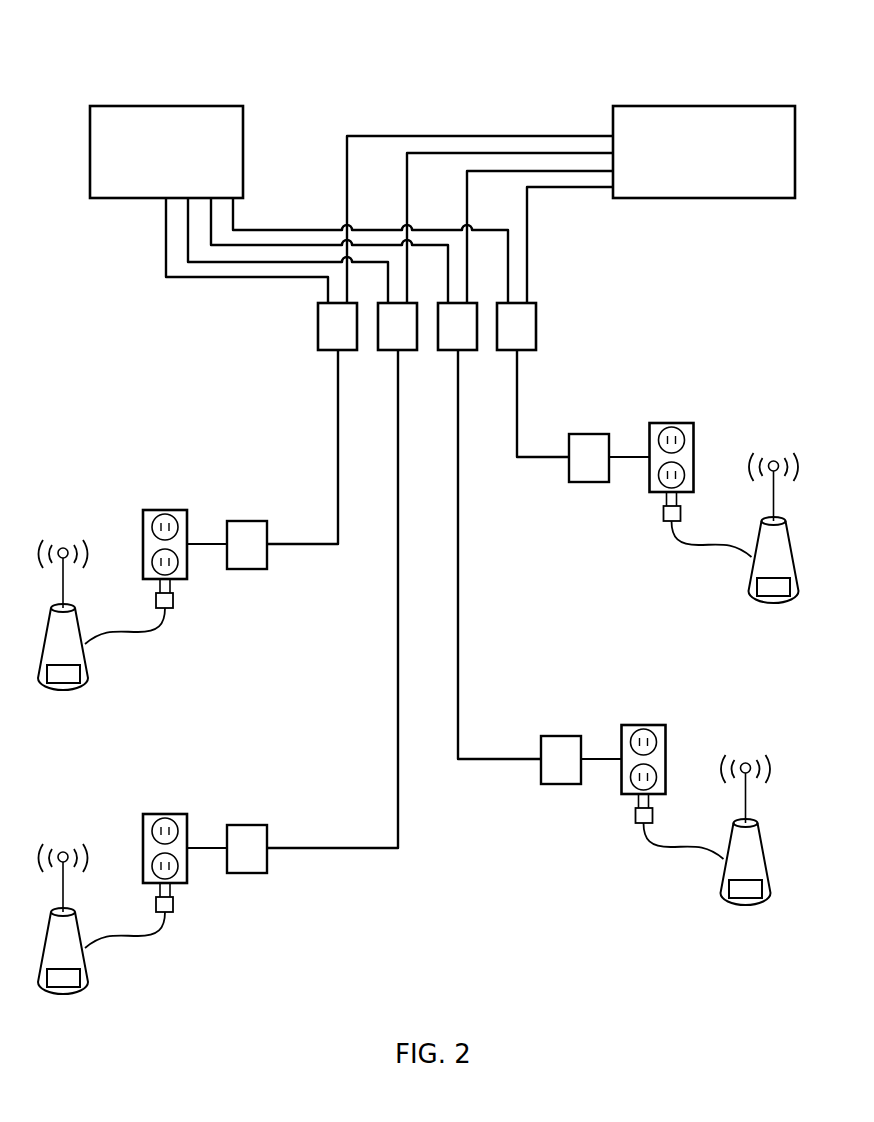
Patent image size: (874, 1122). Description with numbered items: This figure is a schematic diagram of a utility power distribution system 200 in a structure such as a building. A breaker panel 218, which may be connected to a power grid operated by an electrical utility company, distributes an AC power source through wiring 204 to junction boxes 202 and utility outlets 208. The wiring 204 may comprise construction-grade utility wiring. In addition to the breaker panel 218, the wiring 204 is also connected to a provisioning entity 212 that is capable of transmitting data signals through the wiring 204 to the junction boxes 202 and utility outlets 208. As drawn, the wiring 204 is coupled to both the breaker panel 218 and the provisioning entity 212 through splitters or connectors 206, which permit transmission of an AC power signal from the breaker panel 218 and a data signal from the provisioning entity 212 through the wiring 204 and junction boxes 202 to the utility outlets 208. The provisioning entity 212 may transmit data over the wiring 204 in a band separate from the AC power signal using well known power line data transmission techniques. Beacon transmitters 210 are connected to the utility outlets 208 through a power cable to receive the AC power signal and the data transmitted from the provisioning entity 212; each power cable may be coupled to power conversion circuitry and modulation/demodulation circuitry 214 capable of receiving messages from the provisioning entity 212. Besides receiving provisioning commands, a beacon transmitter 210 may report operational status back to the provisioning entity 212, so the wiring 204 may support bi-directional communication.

The power line communication system 200 is at (501, 51).
The junction box 202 is at (247, 521).
The wiring 204 is at (336, 412).
The splitter or connector 206 is at (318, 331).
The utility outlet 208 is at (160, 510).
The beacon transmitter 210 is at (77, 613).
The provisioning entity 212 is at (733, 106).
The modulation/demodulation circuitry 214 is at (63, 684).
The breaker panel 218 is at (182, 106).